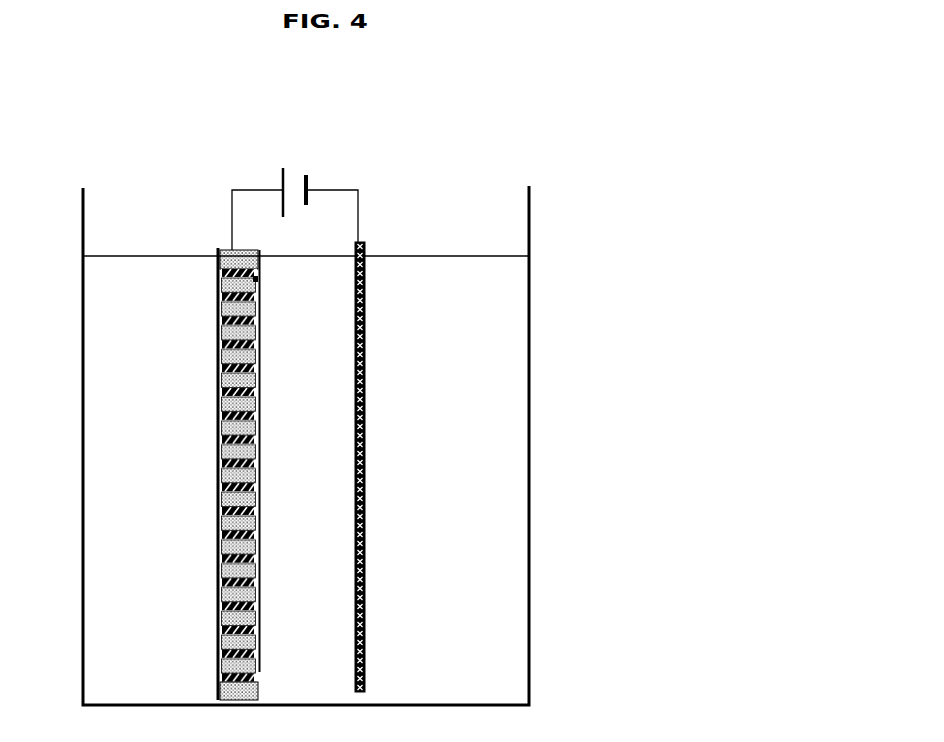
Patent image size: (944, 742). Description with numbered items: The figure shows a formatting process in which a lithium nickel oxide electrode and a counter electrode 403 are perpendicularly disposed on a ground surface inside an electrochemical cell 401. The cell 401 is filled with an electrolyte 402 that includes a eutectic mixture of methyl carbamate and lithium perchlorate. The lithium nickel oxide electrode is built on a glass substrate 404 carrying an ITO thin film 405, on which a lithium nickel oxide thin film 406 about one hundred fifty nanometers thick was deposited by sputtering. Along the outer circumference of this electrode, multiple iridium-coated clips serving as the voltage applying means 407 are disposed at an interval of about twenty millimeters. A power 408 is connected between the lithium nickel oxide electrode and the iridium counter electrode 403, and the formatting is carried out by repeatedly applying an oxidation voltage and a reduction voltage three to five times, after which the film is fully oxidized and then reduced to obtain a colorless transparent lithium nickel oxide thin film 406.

The electrochemical cell 401 is at (529, 214).
The electrolyte 402 is at (510, 324).
The counter electrode 403 is at (365, 455).
The glass substrate 404 is at (217, 272).
The ITO thin film 405 is at (257, 280).
The lithium nickel oxide thin film 406 is at (253, 417).
The voltage applying means (clip) 407 is at (218, 318).
The power 408 is at (307, 175).